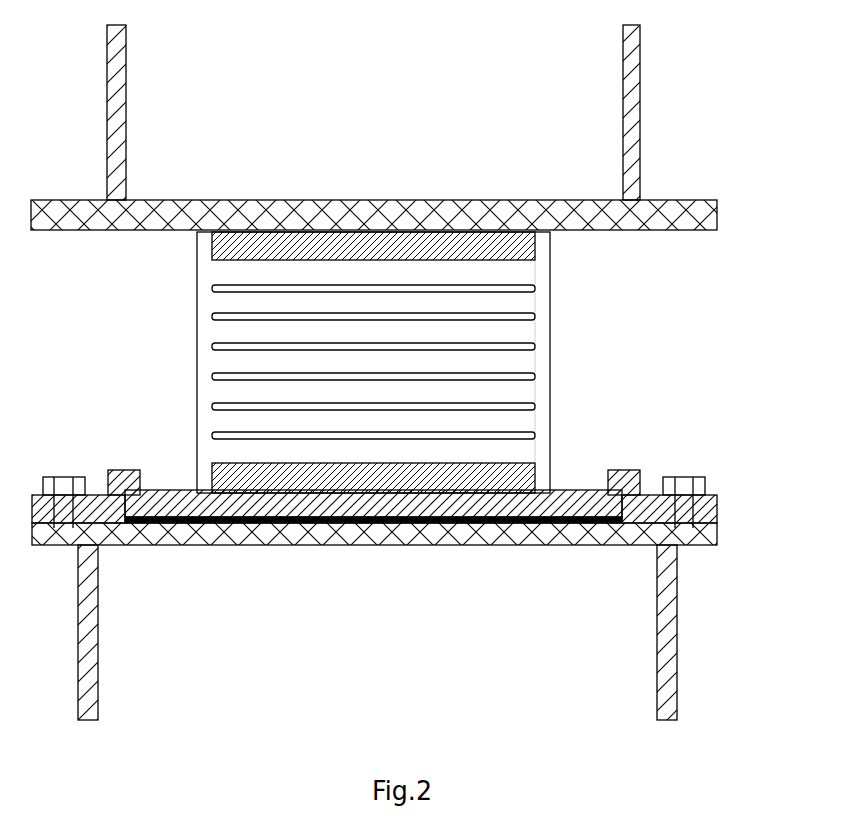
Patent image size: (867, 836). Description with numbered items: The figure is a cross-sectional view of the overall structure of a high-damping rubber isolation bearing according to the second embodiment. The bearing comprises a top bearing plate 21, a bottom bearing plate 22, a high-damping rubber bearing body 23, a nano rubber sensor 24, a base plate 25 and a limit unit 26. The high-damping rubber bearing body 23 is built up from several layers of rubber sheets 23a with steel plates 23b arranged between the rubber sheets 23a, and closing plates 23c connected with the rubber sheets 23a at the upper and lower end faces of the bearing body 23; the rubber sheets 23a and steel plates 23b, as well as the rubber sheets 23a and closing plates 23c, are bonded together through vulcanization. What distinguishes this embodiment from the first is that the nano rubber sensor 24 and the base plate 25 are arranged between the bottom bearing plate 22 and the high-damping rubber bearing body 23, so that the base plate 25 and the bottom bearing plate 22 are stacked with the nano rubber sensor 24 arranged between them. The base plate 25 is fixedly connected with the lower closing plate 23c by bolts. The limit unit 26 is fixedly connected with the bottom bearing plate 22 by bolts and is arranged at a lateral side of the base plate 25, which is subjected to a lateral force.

The top bearing plate 21 is at (305, 213).
The bottom bearing plate 22 is at (210, 538).
The high-damping rubber bearing body 23 is at (551, 308).
The rubber sheets 23a is at (515, 362).
The steel plates 23b is at (245, 318).
The closing plates 23c is at (268, 473).
The nano rubber sensor 24 is at (407, 523).
The base plate 25 is at (546, 498).
The limit unit 26 is at (672, 512).